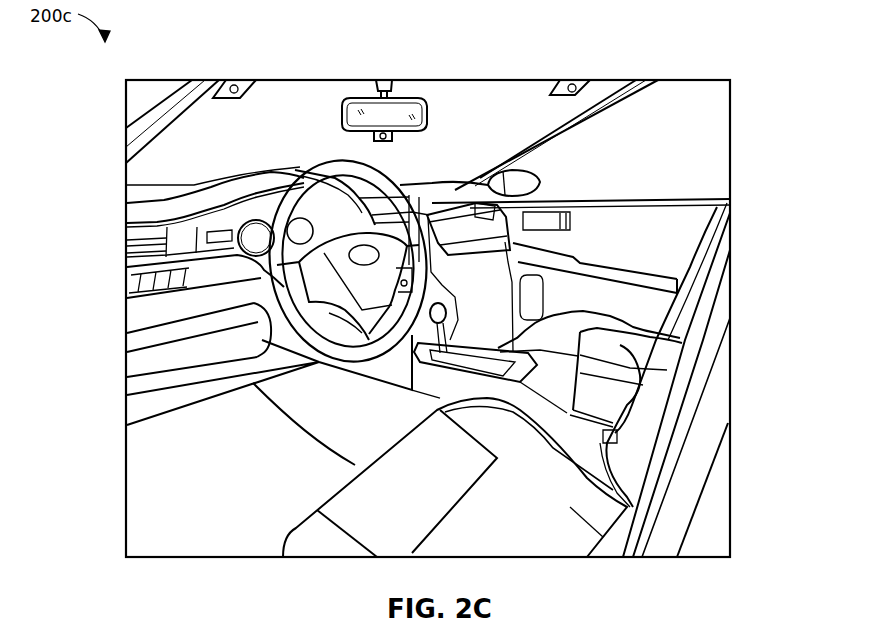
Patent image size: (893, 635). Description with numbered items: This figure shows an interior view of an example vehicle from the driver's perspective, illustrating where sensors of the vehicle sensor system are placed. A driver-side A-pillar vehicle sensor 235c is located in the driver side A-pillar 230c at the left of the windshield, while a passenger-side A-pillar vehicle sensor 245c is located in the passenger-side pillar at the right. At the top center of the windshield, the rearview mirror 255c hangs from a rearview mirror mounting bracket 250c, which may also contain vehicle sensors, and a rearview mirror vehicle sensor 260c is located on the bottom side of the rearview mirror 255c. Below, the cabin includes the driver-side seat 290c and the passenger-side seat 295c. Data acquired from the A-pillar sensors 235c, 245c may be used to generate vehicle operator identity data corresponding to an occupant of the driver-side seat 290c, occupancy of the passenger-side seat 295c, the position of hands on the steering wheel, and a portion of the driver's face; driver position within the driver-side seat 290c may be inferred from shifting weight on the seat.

The driver side A-pillar 230c is at (165, 112).
The driver-side A-pillar vehicle sensor 235c is at (247, 92).
The passenger-side A-pillar vehicle sensor 245c is at (582, 88).
The rearview mirror mounting bracket 250c is at (382, 84).
The rearview mirror 255c is at (395, 115).
The rearview mirror vehicle sensor 260c is at (400, 142).
The driver-side seat 290c is at (520, 525).
The passenger-side seat 295c is at (700, 278).